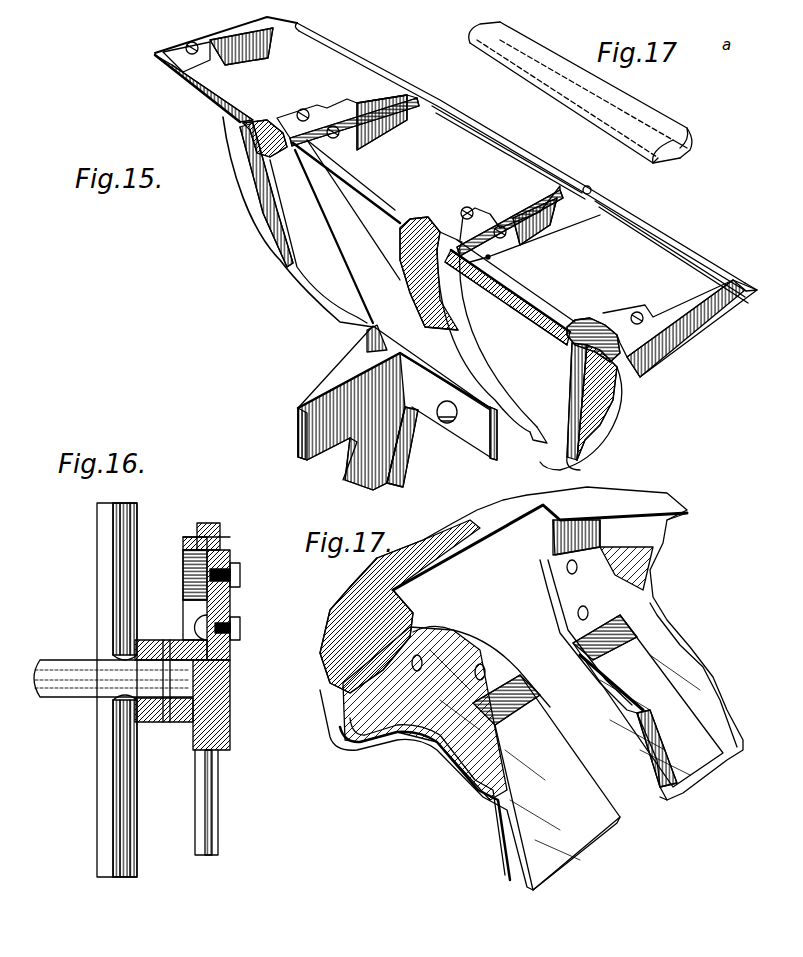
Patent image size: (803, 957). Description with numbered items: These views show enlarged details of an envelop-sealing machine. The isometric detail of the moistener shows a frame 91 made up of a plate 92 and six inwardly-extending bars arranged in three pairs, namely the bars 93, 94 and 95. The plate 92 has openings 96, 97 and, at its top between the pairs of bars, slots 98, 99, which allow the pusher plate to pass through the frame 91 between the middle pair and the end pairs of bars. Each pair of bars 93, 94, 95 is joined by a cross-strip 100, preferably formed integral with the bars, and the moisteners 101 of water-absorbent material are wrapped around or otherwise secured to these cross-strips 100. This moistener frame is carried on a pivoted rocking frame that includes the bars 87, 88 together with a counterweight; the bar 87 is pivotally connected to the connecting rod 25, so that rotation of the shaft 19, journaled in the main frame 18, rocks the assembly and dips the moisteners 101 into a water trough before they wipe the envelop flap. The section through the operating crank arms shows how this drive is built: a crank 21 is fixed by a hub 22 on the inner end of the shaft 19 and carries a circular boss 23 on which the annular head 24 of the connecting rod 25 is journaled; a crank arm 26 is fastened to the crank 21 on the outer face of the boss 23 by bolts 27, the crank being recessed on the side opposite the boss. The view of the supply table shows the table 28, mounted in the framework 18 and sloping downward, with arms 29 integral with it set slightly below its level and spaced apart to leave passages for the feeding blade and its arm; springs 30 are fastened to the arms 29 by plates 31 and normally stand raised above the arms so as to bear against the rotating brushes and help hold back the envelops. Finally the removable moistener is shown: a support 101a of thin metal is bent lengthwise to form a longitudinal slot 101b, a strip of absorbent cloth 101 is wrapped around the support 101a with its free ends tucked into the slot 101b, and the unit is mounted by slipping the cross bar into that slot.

In FIG. 16, the frame 18 is at (115, 616).
In FIG. 16, the shaft 19 is at (50, 672).
In FIG. 16, the crank 21 is at (200, 598).
In FIG. 16, the hub 22 is at (150, 660).
In FIG. 16, the circular boss 23 is at (215, 560).
In FIG. 16, the head 24 is at (207, 521).
In FIG. 16, the connecting rod 25 is at (205, 809).
In FIG. 16, the crank arm 26 is at (222, 706).
In FIG. 16, the bolts 27 is at (240, 578).
In FIG. 17, the supply table 28 is at (467, 530).
In FIG. 17, the arms 29 is at (648, 568).
In FIG. 17, the springs 30 is at (592, 697).
In FIG. 17, the plates 31 is at (560, 600).
In FIG. 15, the bar 87 is at (310, 400).
In FIG. 15, the bar 88 is at (407, 458).
In FIG. 15, the frame 91 is at (378, 202).
In FIG. 15, the plate 92 is at (427, 328).
In FIG. 15, the bars 93 is at (557, 214).
In FIG. 15, the bars 94 is at (370, 114).
In FIG. 15, the bars 95 is at (272, 30).
In FIG. 15, the opening 96 is at (507, 297).
In FIG. 15, the opening 97 is at (318, 241).
In FIG. 15, the slot 98 is at (457, 240).
In FIG. 15, the slot 99 is at (287, 143).
In FIG. 15, the cross-strips 100 is at (424, 98).
In FIG. 15, the moistener 101 is at (500, 138).
In FIG. 17A, the moistener 101 is at (553, 67).
In FIG. 17A, the support 101a is at (685, 143).
In FIG. 17A, the slot 101b is at (643, 157).